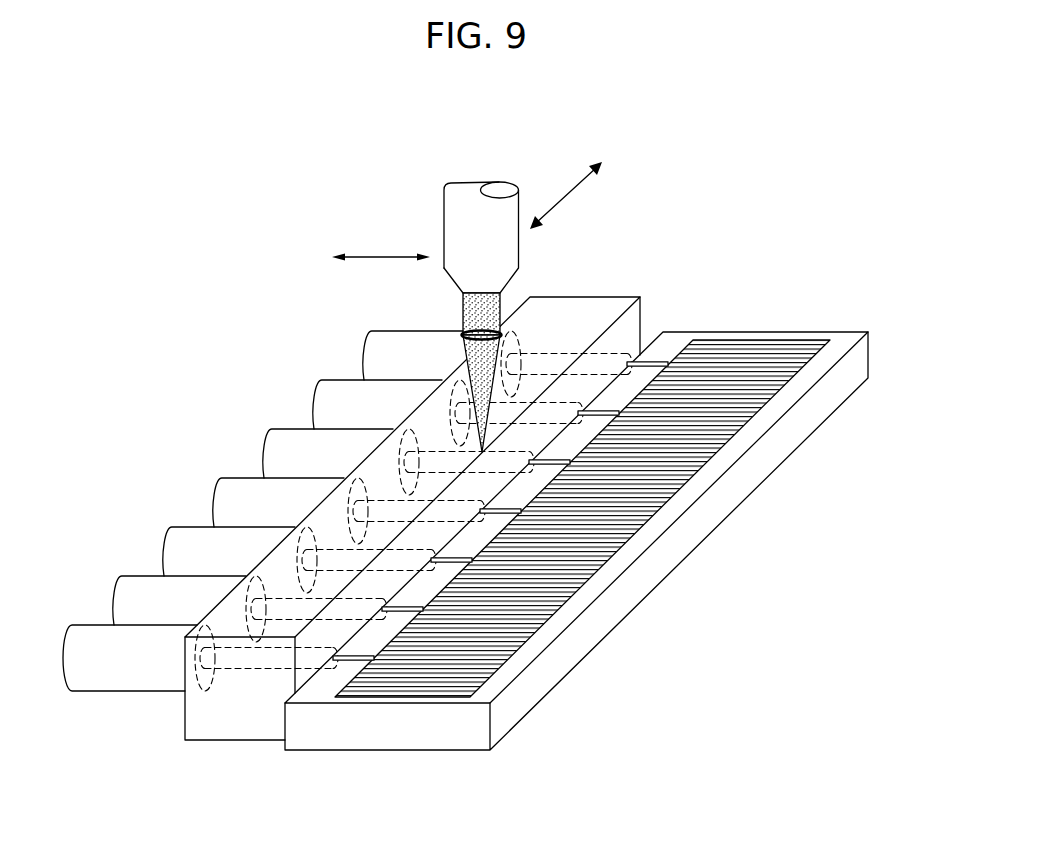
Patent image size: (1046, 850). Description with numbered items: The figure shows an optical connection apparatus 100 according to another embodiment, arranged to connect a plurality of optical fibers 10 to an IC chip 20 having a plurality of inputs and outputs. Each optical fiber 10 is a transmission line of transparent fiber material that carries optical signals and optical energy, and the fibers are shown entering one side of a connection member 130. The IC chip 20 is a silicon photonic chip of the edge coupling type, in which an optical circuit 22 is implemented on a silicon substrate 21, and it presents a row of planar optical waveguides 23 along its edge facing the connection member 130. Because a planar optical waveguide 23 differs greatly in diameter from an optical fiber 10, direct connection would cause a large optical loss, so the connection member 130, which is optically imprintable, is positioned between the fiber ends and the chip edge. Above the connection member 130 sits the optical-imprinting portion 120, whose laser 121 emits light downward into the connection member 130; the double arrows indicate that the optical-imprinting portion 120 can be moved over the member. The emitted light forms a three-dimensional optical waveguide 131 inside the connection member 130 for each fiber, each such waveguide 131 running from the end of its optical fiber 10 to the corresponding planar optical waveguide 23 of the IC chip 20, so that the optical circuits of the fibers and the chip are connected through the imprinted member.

The optical fiber 10 is at (112, 675).
The IC chip 20 is at (576, 565).
The silicon substrate 21 is at (585, 633).
The optical circuit 22 is at (603, 552).
The planar optical waveguide 23 is at (347, 662).
The optical connection apparatus 100 is at (500, 476).
The optical-imprinting portion 120 is at (463, 299).
The laser 121 is at (507, 238).
The connection member 130 is at (205, 722).
The 3D optical waveguide 131 is at (253, 723).